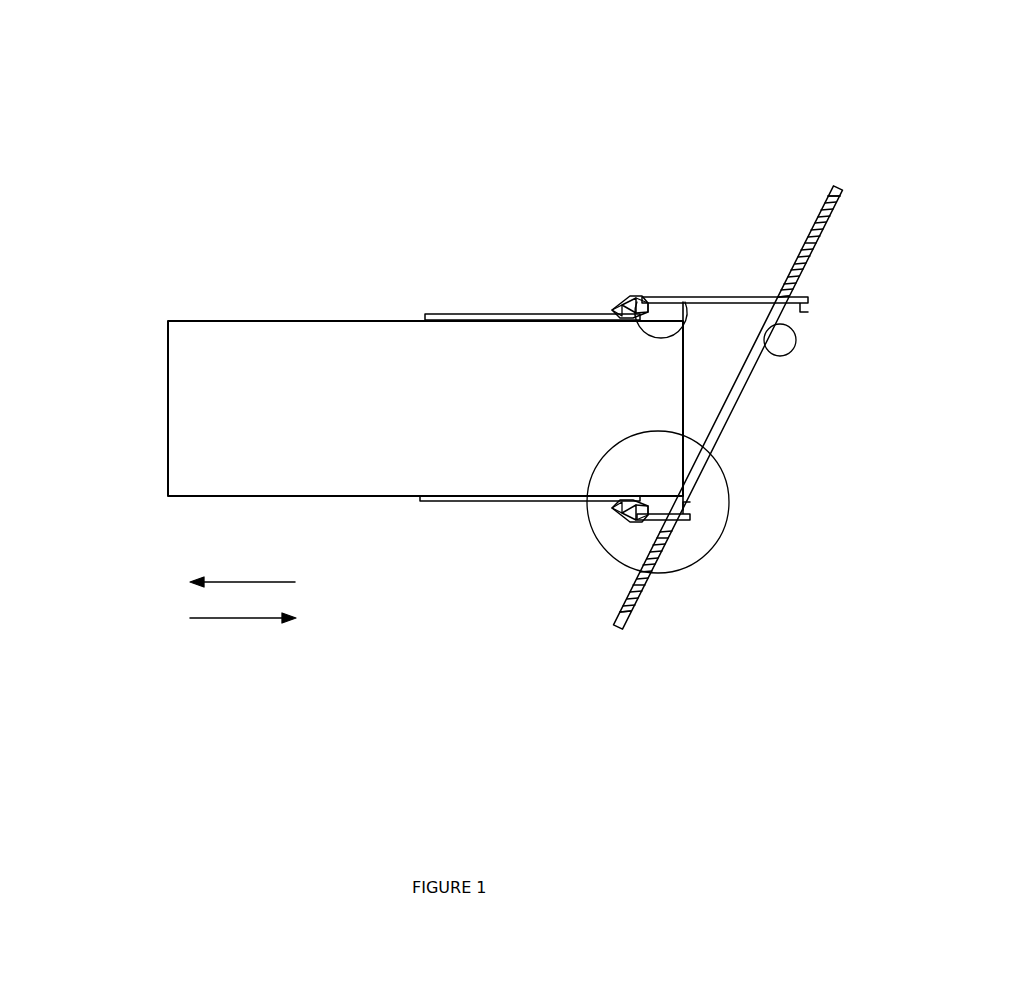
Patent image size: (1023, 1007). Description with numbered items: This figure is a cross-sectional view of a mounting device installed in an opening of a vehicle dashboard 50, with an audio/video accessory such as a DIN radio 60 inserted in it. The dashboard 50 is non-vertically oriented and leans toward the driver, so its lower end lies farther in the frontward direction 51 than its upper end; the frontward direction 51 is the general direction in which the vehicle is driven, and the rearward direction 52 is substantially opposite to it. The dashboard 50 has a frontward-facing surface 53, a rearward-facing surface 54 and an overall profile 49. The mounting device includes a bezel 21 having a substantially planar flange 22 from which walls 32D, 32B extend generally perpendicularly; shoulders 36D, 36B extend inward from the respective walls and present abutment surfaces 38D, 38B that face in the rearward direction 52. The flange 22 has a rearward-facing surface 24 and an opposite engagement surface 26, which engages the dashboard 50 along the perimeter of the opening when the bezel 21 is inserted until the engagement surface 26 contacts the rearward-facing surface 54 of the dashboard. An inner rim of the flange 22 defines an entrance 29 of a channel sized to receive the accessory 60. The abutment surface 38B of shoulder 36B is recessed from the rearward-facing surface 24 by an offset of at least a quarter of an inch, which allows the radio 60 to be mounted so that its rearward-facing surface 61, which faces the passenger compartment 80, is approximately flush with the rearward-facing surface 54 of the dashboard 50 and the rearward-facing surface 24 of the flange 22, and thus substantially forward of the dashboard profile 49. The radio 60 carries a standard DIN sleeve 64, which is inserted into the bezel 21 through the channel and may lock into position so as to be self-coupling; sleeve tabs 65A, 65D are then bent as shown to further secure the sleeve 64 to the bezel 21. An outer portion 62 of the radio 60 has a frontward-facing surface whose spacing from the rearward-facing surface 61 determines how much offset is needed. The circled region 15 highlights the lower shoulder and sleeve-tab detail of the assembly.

The detail circle region 15 is at (717, 552).
The bezel 21 is at (742, 297).
The flange 22 is at (722, 455).
The rearward-facing surface 24 is at (695, 522).
The engagement surface 26 is at (777, 358).
The entrance 29 is at (788, 337).
The wall 32D is at (793, 292).
The wall 32B is at (650, 565).
The shoulder 36D is at (637, 303).
The shoulder 36B is at (618, 512).
The abutment surface 38D is at (657, 300).
The abutment surface 38B is at (630, 520).
The profile 49 is at (815, 172).
The dashboard 50 is at (650, 587).
The frontward direction 51 is at (222, 582).
The rearward direction 52 is at (240, 618).
The frontward-facing surface 53 is at (834, 225).
The rearward-facing surface 54 is at (828, 212).
The DIN radio 60 is at (217, 320).
The rearward-facing surface 61 is at (684, 398).
The outer portion 62 is at (715, 297).
The sleeve 64 is at (470, 313).
The sleeve tab 65A is at (633, 313).
The sleeve tab 65D is at (600, 508).
The passenger compartment 80 is at (985, 354).